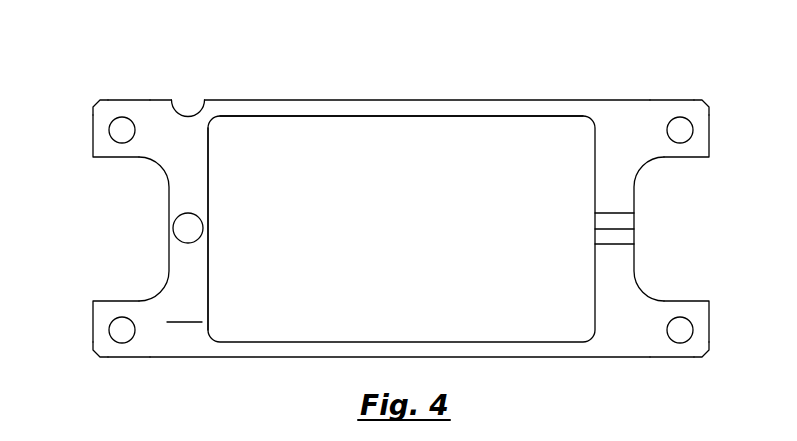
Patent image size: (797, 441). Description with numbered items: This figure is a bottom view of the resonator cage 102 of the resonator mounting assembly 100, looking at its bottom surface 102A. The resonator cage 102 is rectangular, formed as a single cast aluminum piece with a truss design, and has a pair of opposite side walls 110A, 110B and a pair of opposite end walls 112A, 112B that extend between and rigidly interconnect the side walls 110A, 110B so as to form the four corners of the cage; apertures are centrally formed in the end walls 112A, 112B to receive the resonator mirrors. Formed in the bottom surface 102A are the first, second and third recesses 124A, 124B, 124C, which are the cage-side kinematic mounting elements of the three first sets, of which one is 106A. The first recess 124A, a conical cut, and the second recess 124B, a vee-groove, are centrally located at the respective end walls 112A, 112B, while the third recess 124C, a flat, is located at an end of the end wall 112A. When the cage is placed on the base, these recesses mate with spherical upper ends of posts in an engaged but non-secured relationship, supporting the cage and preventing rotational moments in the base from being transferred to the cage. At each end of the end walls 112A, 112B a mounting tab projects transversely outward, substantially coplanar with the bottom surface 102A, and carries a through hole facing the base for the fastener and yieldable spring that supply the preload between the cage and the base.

The resonator mounting assembly 100 is at (295, 90).
The resonator cage 102 is at (520, 92).
The bottom surface 102A is at (179, 323).
The first set of kinematic mounting elements 106A is at (401, 229).
The side wall 110A is at (410, 108).
The side wall 110B is at (467, 350).
The end wall 112A is at (613, 282).
The end wall 112B is at (187, 275).
The first recess 124A is at (622, 226).
The second recess 124B is at (190, 228).
The third recess 124C is at (188, 108).